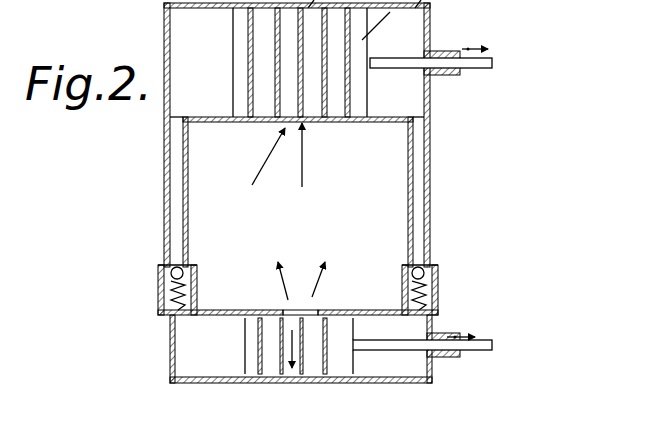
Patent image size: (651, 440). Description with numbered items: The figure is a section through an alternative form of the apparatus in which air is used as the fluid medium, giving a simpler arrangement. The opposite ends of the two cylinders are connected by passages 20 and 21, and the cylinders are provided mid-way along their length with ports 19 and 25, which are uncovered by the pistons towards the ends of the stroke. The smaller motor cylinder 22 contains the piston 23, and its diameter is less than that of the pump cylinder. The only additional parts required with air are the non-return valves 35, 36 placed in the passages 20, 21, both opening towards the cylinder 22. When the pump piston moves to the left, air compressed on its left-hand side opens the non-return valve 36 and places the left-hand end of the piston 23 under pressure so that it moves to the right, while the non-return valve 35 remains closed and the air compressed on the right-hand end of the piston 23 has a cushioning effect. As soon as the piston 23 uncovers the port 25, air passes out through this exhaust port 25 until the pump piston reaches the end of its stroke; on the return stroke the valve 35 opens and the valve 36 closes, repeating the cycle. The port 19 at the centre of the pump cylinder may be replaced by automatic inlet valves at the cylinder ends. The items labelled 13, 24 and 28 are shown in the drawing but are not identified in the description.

The outlet pipe 13 is at (450, 60).
The port 19 is at (300, 122).
The passage 20 is at (418, 178).
The passage 21 is at (177, 205).
The cylinder 22 is at (243, 380).
The piston 23 is at (338, 330).
The inlet pipe 24 is at (458, 347).
The exhaust port 25 is at (297, 310).
The upper baffle plates 28 is at (273, 58).
The non-return valve 35 is at (405, 268).
The non-return valve 36 is at (185, 266).